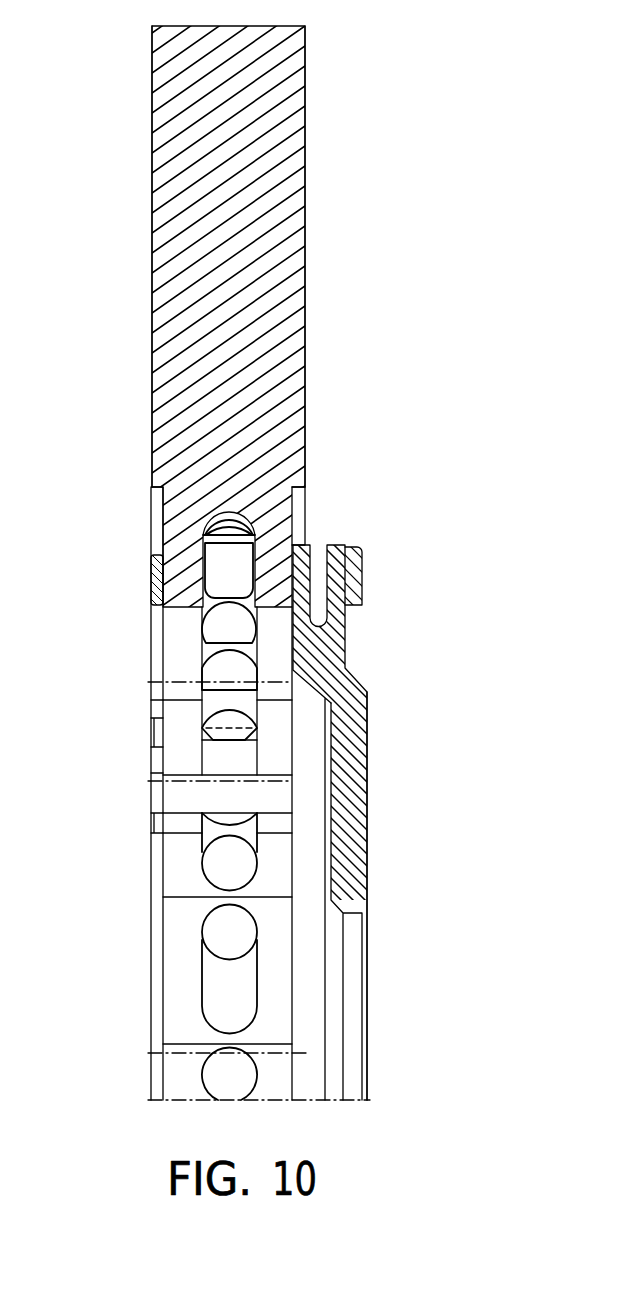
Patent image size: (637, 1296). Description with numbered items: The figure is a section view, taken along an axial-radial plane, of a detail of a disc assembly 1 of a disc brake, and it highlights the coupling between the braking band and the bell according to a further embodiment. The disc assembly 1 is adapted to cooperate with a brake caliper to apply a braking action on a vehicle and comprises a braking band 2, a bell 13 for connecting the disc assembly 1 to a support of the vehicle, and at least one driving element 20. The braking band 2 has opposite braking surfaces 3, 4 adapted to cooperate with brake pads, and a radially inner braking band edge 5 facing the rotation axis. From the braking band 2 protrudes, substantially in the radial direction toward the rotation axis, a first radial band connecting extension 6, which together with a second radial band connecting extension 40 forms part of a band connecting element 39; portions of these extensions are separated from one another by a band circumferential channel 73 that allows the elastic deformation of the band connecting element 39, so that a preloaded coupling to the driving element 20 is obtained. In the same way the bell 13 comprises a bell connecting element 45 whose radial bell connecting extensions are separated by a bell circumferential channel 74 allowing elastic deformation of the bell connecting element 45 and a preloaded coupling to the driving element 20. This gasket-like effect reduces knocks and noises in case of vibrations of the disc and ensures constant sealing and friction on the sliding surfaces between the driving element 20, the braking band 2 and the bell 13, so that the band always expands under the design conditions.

The disc assembly of disc brake 1 is at (424, 246).
The braking band 2 is at (247, 287).
The opposite braking surface 3 is at (305, 180).
The opposite braking surface 4 is at (152, 170).
The radially inner braking band edge 5 is at (155, 485).
The first radial band connecting extension 6 is at (268, 513).
The bell 13 is at (337, 762).
The driving element 20 is at (370, 597).
The band connecting element 39 is at (248, 507).
The second radial band connecting extension 40 is at (155, 573).
The bell connecting element 45 is at (343, 541).
The band circumferential channel 73 is at (218, 570).
The bell circumferential channel 74 is at (316, 549).